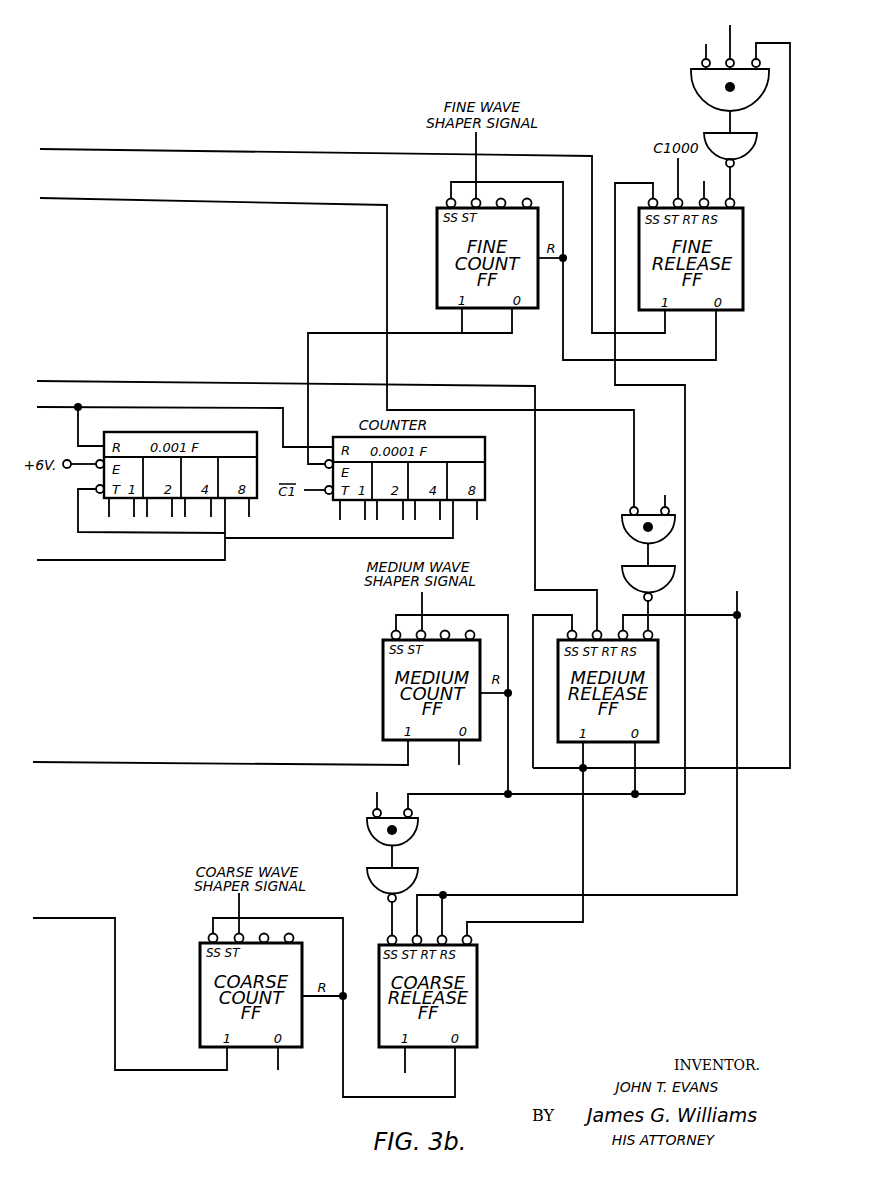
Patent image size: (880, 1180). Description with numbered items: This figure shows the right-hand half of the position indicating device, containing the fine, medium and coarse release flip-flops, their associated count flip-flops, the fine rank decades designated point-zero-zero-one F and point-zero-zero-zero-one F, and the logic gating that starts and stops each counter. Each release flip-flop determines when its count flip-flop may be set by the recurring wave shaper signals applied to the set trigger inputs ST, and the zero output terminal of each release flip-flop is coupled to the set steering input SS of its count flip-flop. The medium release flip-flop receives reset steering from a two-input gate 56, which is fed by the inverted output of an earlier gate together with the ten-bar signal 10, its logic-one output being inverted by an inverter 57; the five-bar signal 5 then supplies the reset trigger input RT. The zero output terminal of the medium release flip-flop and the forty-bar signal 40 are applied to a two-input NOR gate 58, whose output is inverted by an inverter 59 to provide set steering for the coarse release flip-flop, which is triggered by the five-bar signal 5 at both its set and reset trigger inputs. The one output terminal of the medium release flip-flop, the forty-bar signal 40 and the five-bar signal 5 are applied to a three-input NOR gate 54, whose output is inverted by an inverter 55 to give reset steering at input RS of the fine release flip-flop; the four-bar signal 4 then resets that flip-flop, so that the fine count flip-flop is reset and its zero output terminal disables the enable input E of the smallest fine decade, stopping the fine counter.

The three-input NOR gate 54 is at (692, 76).
The inverter 55 is at (752, 153).
The two-input gate 56 is at (622, 518).
The inverter 57 is at (622, 568).
The two-input NOR gate 58 is at (425, 818).
The inverter 59 is at (422, 867).
The 40-bar signal 40 is at (699, 29).
The 5-bar signal 5 is at (726, 11).
The 4-bar signal 4 is at (699, 167).
The 10-bar signal 10 is at (666, 492).